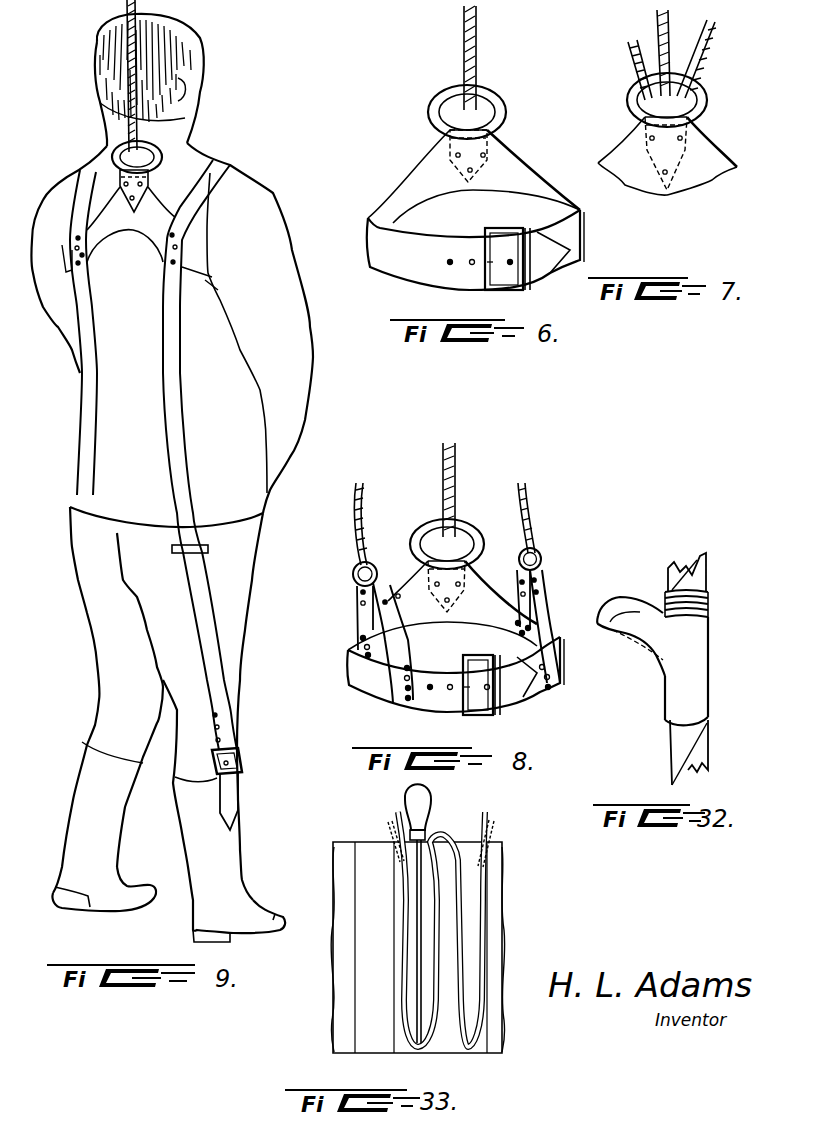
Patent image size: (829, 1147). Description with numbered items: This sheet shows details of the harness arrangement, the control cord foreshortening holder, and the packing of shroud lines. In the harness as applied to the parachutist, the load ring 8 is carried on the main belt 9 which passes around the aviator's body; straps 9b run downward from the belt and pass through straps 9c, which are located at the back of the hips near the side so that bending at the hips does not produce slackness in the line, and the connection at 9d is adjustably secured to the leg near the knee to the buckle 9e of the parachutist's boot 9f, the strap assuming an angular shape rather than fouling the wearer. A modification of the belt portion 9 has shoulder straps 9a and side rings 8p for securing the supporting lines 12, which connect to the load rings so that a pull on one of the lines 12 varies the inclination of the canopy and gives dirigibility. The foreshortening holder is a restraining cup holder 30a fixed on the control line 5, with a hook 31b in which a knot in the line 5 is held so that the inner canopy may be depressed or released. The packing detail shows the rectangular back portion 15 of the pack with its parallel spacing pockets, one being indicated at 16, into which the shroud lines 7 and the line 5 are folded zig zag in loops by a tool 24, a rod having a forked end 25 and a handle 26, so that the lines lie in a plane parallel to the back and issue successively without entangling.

In FIG. 9, the line 5 is at (130, 44).
In FIG. 6, the line 5 is at (463, 27).
In FIG. 7, the line 5 is at (666, 34).
In FIG. 8, the line 5 is at (456, 476).
In FIG. 32, the line 5 is at (672, 745).
In FIG. 33, the line 5 is at (488, 814).
In FIG. 33, the shroud lines 7 is at (388, 832).
In FIG. 9, the load ring 8 is at (112, 153).
In FIG. 6, the load ring 8 is at (490, 103).
In FIG. 7, the load ring 8 is at (705, 96).
In FIG. 8, the load ring 8 is at (470, 528).
In FIG. 8, the rings 8p is at (353, 577).
In FIG. 9, the main belt 9 is at (160, 195).
In FIG. 6, the main belt 9 is at (515, 162).
In FIG. 7, the main belt 9 is at (702, 148).
In FIG. 8, the main belt 9 is at (485, 584).
In FIG. 8, the shoulder straps 9a is at (550, 598).
In FIG. 9, the straps 9b is at (96, 410).
In FIG. 9, the straps 9c is at (208, 542).
In FIG. 9, the connection 9d is at (238, 752).
In FIG. 9, the buckle 9e is at (238, 805).
In FIG. 9, the boot 9f is at (240, 868).
In FIG. 7, the supporting lines 12 is at (633, 56).
In FIG. 8, the supporting lines 12 is at (364, 514).
In FIG. 33, the central or back portion 15 is at (506, 908).
In FIG. 33, the panel slats 16 is at (373, 867).
In FIG. 33, the tool 24 is at (430, 848).
In FIG. 33, the forked end 25 is at (425, 1047).
In FIG. 33, the handle 26 is at (432, 790).
In FIG. 32, the restraining cup holder 30a is at (705, 683).
In FIG. 32, the hook 31b is at (618, 601).